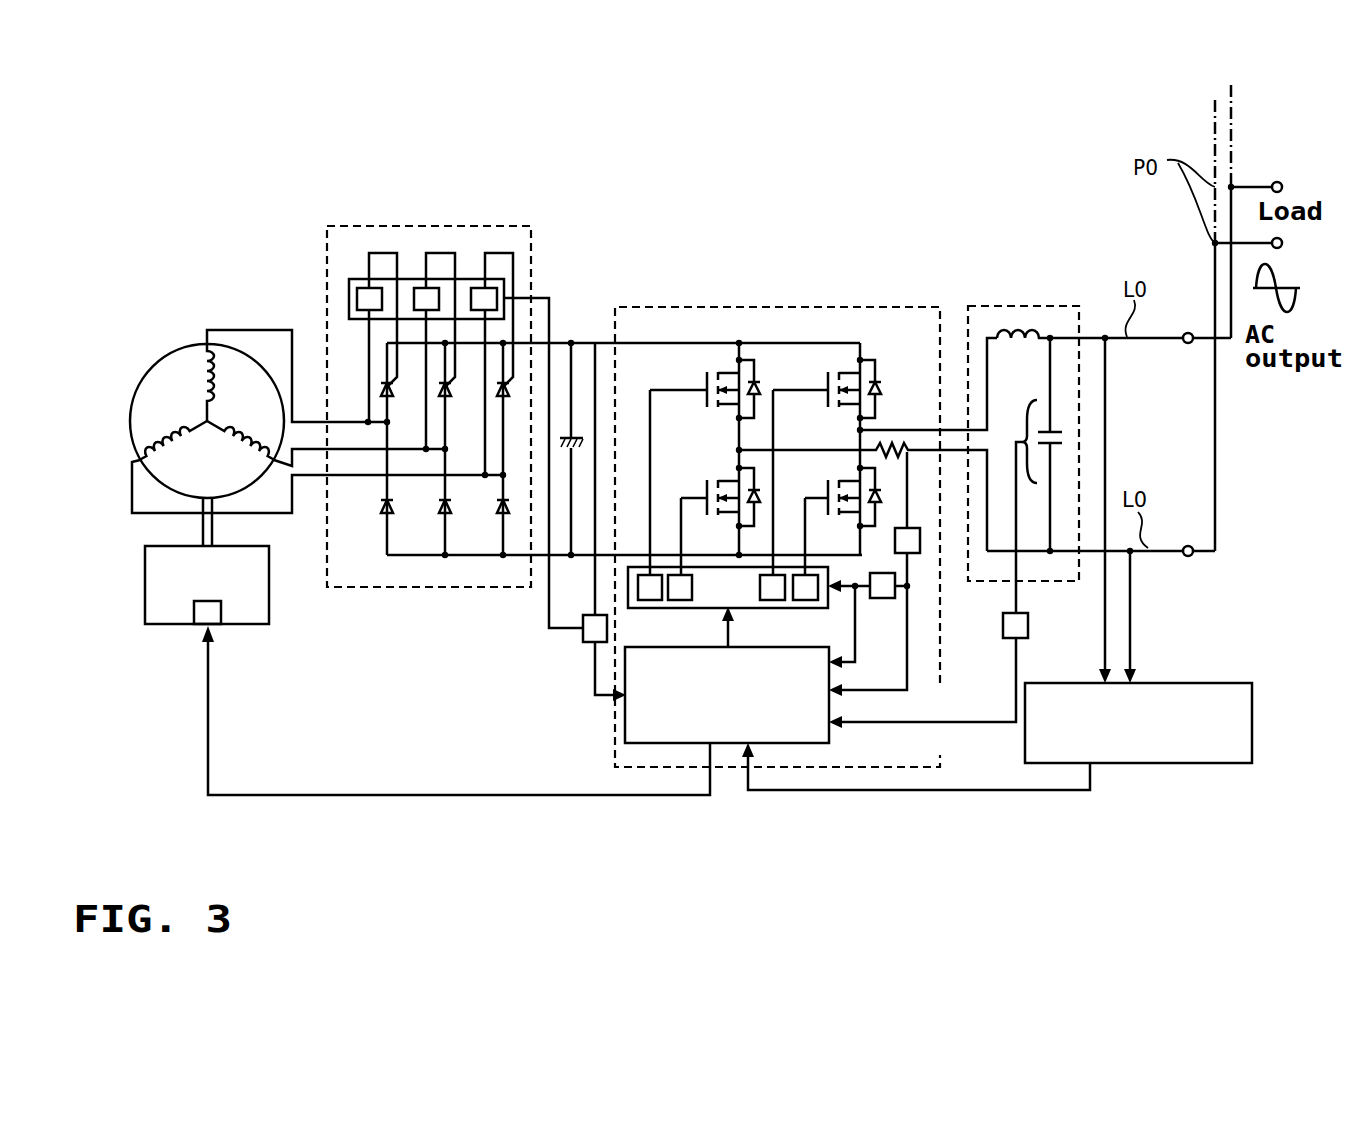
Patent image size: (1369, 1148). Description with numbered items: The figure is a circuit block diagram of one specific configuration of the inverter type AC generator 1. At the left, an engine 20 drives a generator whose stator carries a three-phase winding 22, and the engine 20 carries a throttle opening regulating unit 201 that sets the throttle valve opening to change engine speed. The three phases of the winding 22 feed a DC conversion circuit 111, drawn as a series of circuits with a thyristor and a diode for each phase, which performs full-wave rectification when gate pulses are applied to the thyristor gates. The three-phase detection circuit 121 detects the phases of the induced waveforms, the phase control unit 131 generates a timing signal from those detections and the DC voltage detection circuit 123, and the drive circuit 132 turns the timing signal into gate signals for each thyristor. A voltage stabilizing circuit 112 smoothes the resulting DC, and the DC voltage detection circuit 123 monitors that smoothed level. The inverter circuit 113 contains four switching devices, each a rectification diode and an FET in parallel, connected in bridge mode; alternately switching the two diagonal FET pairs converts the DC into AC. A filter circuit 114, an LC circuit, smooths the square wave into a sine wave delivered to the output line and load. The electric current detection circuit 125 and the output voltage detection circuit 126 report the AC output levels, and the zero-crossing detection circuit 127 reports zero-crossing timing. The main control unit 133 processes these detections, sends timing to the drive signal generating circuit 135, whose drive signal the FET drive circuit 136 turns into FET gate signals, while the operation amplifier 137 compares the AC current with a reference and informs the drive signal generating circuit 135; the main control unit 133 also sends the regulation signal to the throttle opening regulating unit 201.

The inverter type AC generator 1 is at (786, 190).
The three-phase winding 22 is at (172, 338).
The engine 20 is at (250, 626).
The throttle opening regulating unit 201 is at (200, 615).
The DC conversion circuit 111 is at (516, 236).
The three-phase detection circuit 121 is at (512, 297).
The phase control unit 131 is at (534, 351).
The drive circuit 132 is at (585, 364).
The voltage stabilizing circuit 112 is at (562, 436).
The inverter circuit 113 is at (860, 322).
The filter circuit 114 is at (1059, 322).
The DC voltage detection circuit 123 is at (582, 634).
The electric current detection circuit 125 is at (921, 548).
The output voltage detection circuit 126 is at (1003, 636).
The zero-crossing detection circuit 127 is at (1072, 683).
The main control unit 133 is at (623, 720).
The drive signal generating circuit 135 is at (732, 590).
The FET drive circuit 136 is at (804, 606).
The operation amplifier 137 is at (882, 600).